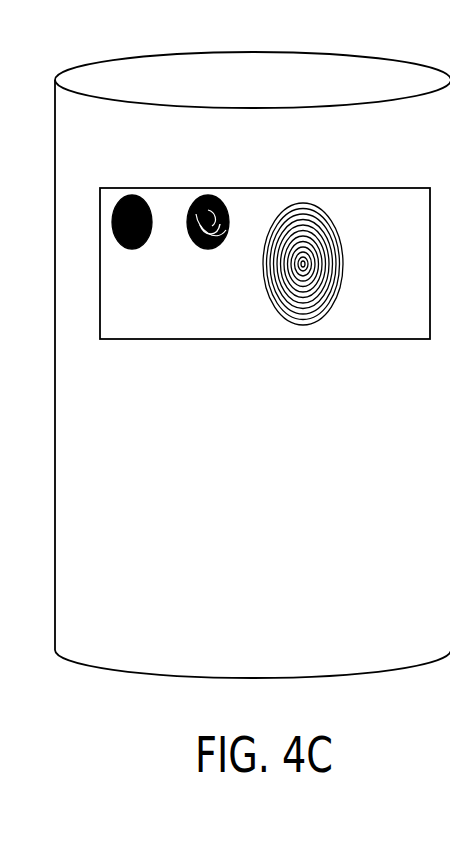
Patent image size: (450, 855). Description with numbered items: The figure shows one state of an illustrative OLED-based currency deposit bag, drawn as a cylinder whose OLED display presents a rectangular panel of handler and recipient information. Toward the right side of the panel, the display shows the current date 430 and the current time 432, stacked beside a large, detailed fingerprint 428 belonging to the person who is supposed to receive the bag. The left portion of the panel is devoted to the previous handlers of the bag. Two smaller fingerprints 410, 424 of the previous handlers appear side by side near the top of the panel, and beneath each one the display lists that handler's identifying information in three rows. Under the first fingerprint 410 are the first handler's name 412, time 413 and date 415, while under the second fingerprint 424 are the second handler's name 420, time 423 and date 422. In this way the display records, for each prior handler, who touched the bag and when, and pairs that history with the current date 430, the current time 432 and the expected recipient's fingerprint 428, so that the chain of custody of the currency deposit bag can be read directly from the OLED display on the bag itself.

The fingerprint of previous handler 410 is at (130, 196).
The fingerprint of previous handler 424 is at (206, 196).
The name information 412 is at (105, 268).
The time information 413 is at (105, 296).
The date information 415 is at (105, 324).
The name information 420 is at (233, 270).
The time information 423 is at (249, 302).
The date information 422 is at (256, 327).
The fingerprint of intended recipient 428 is at (339, 278).
The current date 430 is at (352, 233).
The current time 432 is at (352, 206).